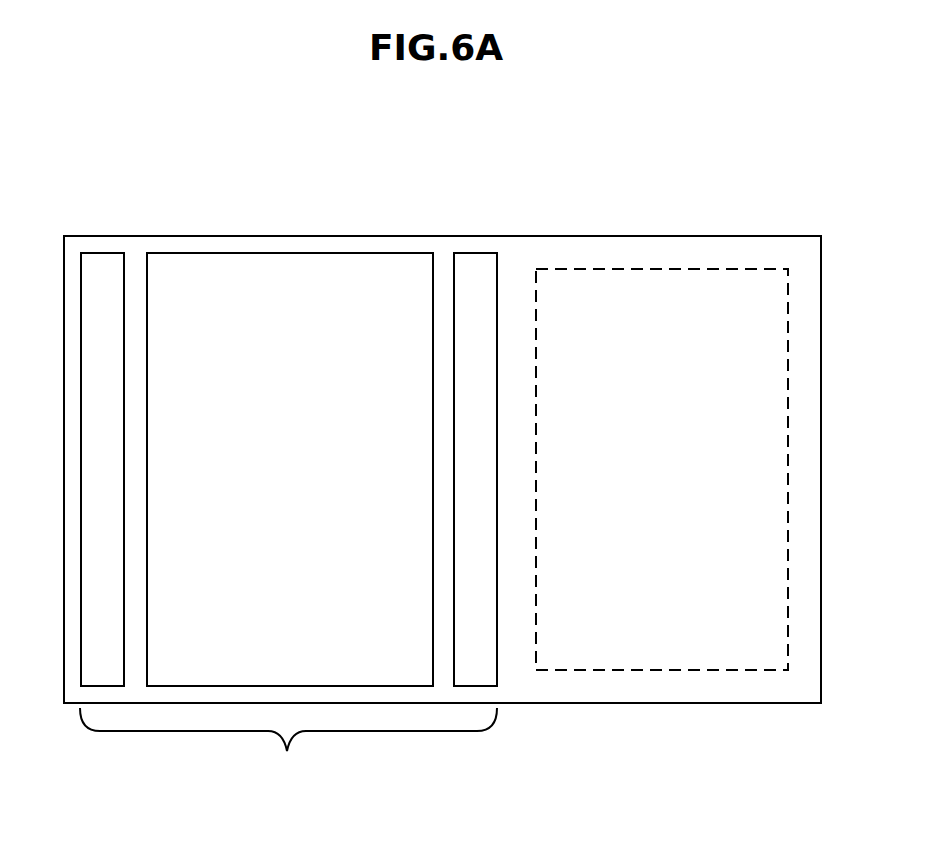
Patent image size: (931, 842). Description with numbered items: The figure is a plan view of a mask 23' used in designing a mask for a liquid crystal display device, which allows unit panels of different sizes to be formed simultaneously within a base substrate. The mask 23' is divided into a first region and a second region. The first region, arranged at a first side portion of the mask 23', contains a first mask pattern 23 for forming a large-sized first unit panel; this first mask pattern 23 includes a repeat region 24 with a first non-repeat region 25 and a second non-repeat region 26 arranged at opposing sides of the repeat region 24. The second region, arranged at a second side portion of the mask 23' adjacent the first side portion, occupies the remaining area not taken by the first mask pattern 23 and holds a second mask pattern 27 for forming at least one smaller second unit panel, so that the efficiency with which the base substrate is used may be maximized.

The first mask pattern 23 is at (288, 746).
The mask 23' is at (442, 445).
The repeat region 24 is at (266, 268).
The first non-repeat region 25 is at (102, 267).
The second non-repeat region 26 is at (477, 267).
The second mask pattern 27 is at (679, 290).